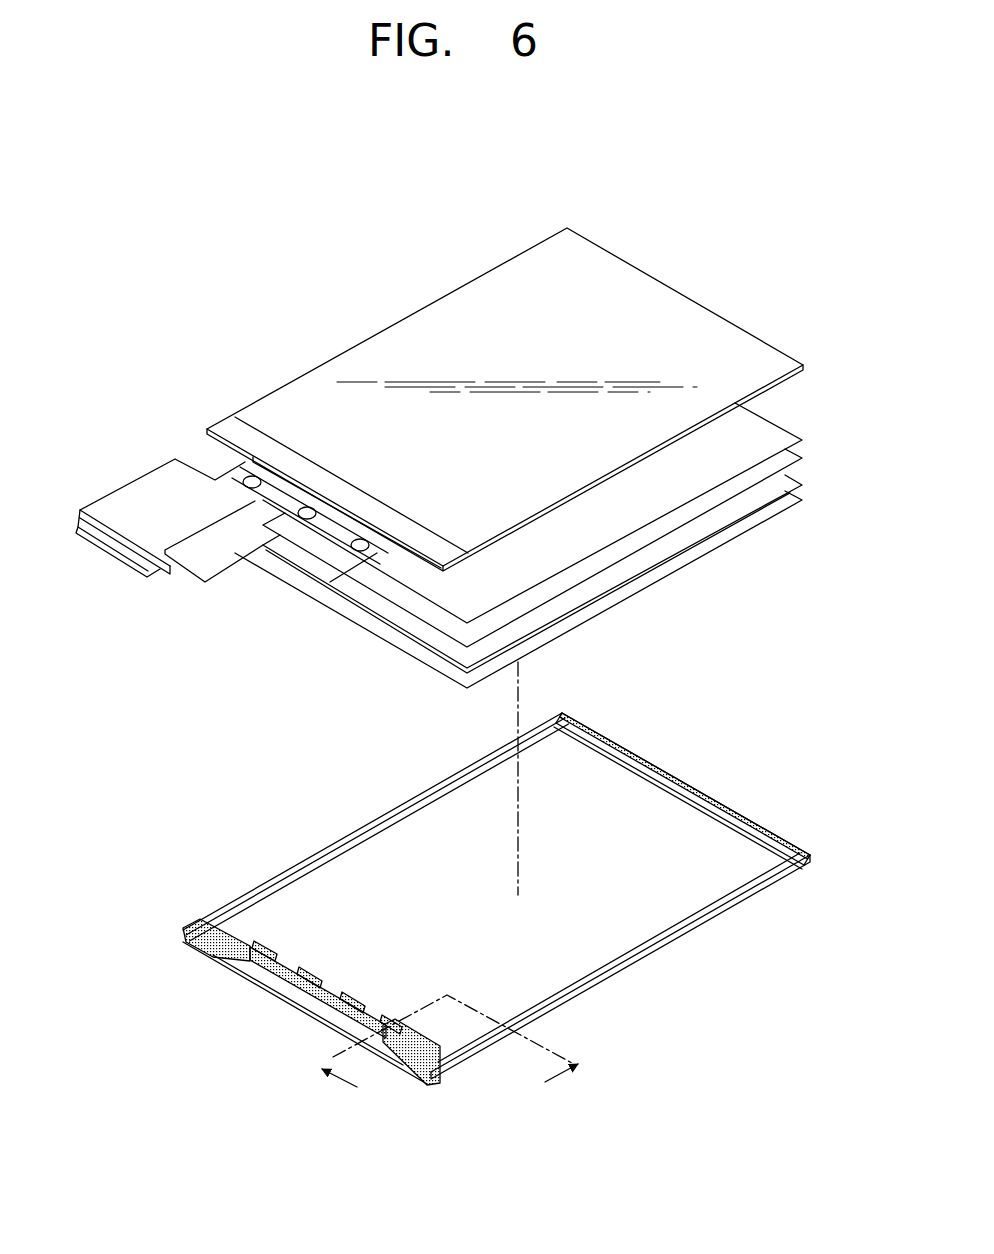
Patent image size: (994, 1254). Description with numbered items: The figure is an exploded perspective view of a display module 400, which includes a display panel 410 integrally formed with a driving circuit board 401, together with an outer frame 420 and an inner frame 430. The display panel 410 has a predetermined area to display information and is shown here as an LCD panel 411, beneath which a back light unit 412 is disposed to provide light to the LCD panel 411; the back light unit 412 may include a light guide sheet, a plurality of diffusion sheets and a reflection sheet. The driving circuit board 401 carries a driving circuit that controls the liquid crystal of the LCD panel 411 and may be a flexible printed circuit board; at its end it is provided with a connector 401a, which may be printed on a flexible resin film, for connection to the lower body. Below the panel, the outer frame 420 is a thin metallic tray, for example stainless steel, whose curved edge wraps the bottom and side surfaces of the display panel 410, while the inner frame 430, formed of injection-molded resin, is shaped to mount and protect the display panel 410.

The display module 400 is at (152, 345).
The display panel 410 is at (870, 293).
The LCD panel 411 is at (760, 350).
The back light unit 412 is at (812, 437).
The driving circuit board 401 is at (135, 492).
The connector 401a is at (118, 552).
The outer frame 420 is at (655, 945).
The inner frame 430 is at (183, 928).